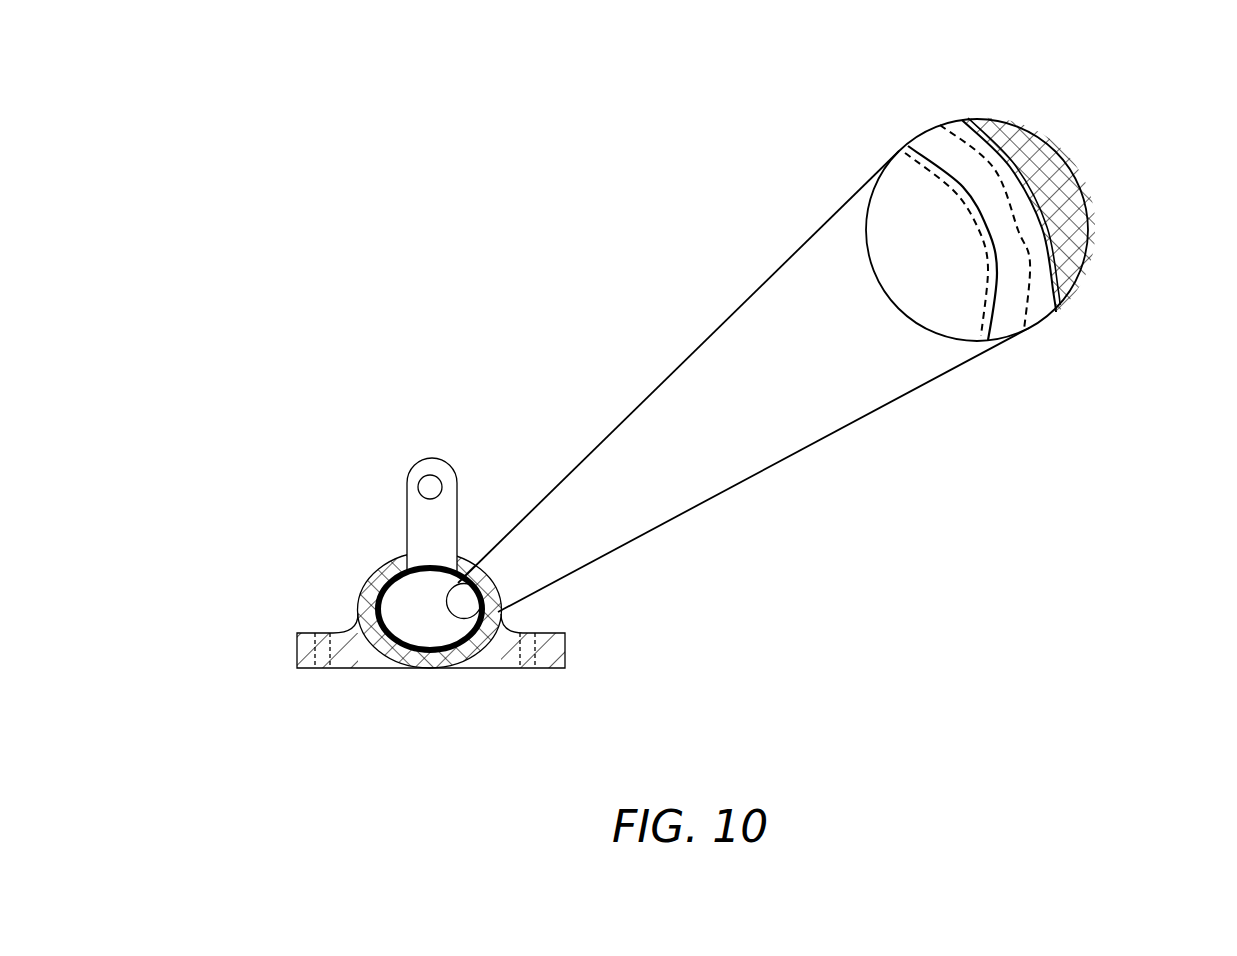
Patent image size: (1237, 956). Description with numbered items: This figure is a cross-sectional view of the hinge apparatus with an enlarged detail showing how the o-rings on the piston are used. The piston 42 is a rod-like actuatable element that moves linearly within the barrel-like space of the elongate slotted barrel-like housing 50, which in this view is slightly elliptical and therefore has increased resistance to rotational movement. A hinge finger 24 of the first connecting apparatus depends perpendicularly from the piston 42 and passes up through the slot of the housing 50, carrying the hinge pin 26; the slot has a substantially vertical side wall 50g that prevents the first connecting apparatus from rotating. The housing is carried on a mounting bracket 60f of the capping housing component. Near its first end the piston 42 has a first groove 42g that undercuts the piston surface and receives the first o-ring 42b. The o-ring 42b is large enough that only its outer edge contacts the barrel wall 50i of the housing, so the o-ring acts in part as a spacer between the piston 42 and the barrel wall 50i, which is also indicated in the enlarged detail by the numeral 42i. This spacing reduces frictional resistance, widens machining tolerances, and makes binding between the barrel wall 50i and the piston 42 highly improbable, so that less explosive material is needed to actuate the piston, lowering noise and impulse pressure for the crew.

The hinge finger 24 is at (427, 513).
The hinge pin 26 is at (422, 478).
The piston 42 is at (405, 592).
The first o-ring 42b is at (462, 627).
The first groove 42g is at (1025, 333).
The ring inner surface 42i is at (1050, 296).
The elongate slotted barrel-like housing 50 is at (367, 605).
The slot side wall 50g is at (390, 557).
The barrel wall 50i is at (380, 616).
The mounting bracket 60f is at (353, 648).